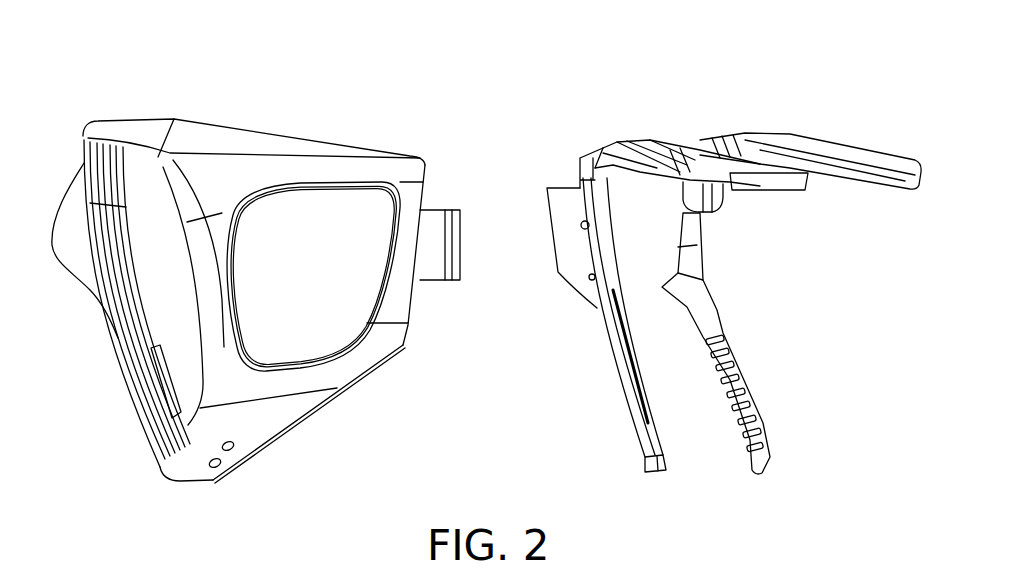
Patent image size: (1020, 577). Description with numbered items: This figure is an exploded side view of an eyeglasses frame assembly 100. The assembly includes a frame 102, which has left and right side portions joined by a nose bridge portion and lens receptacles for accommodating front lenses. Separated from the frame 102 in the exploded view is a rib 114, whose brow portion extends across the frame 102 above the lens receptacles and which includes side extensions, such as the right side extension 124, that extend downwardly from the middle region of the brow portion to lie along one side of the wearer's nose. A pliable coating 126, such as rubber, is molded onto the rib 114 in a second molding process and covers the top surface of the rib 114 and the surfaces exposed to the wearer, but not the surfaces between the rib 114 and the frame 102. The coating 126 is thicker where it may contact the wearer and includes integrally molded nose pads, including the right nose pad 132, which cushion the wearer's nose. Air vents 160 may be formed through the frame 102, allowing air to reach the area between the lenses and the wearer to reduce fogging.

The eyeglasses frame assembly 100 is at (506, 25).
The frame 102 is at (236, 114).
The rib 114 is at (642, 122).
The right side extension 124 is at (614, 372).
The pliable coating 126 is at (790, 116).
The right nose pad 132 is at (765, 424).
The air vents 160 is at (232, 446).